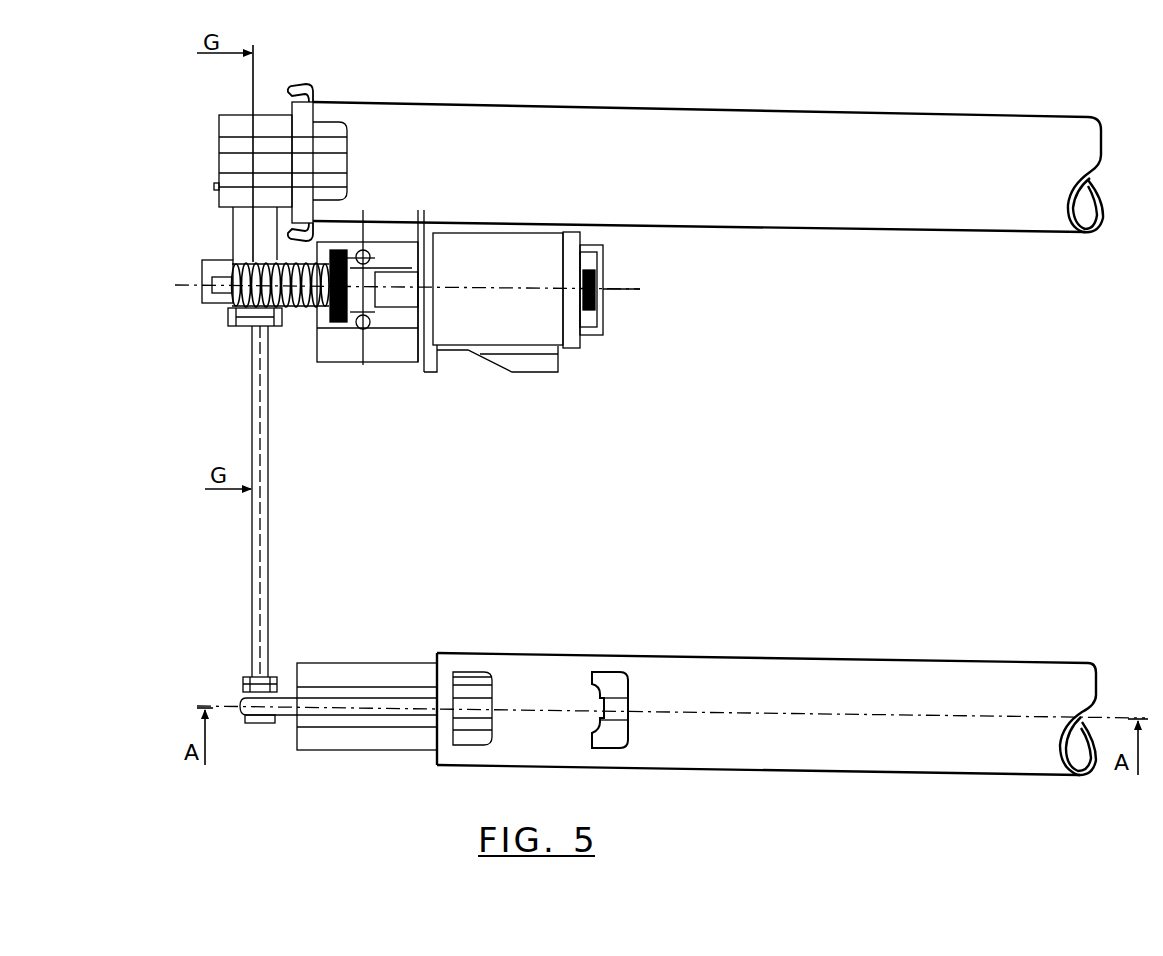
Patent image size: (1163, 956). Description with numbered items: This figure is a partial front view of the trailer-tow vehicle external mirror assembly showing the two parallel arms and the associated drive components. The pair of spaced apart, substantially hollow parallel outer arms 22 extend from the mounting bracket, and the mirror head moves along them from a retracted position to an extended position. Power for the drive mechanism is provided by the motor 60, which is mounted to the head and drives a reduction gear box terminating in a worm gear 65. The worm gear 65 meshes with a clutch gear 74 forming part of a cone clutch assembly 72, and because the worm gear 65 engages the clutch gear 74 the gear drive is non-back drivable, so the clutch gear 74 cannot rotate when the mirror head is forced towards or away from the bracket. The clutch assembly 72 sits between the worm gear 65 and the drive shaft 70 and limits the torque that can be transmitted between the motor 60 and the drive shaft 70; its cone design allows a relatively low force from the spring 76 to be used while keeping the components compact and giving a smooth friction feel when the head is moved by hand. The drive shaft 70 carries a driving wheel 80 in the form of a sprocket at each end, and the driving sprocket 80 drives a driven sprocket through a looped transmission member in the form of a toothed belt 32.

The outer arms 22 is at (646, 229).
The toothed belt 32 is at (288, 694).
The motor 60 is at (468, 315).
The worm gear 65 is at (294, 309).
The drive shaft 70 is at (263, 555).
The cone clutch assembly 72 is at (184, 301).
The clutch gear 74 is at (216, 305).
The spring 76 is at (234, 239).
The driving wheel 80 is at (262, 740).